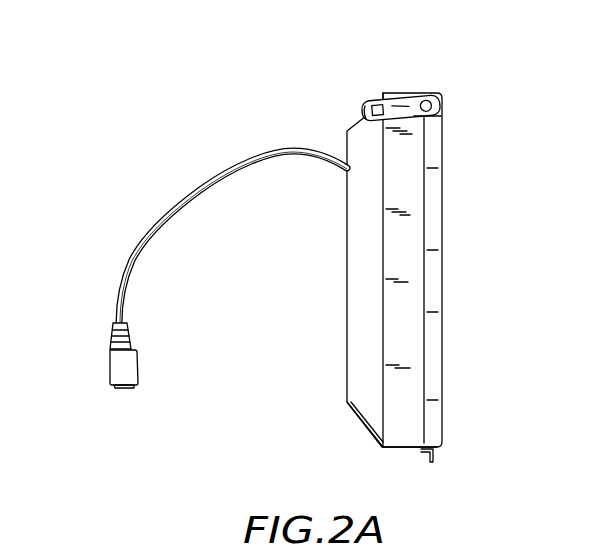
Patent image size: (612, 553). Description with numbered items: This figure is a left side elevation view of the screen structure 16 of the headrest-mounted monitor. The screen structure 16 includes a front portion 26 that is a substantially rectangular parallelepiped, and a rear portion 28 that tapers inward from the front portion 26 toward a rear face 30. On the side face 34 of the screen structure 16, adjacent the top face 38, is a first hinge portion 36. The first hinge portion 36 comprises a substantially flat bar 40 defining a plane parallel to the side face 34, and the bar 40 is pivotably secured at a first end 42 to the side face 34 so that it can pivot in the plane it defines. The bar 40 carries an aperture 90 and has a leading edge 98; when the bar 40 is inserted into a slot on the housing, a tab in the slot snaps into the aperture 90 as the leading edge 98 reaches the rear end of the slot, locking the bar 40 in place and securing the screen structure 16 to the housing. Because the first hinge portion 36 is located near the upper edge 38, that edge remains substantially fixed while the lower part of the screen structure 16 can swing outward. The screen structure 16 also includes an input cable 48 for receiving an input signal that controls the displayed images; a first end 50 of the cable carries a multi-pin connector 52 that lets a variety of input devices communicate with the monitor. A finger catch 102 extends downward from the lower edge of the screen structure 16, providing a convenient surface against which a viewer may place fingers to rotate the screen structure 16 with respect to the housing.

The screen structure 16 is at (464, 73).
The front portion 26 is at (402, 437).
The rear portion 28 is at (367, 412).
The rear face 30 is at (346, 360).
The right face 34 is at (397, 237).
The first hinge portion 36 is at (388, 97).
The top face 38 is at (405, 93).
The flat bar 40 is at (418, 115).
The first end 42 is at (437, 107).
The input cable 48 is at (216, 172).
The first end of the cable 50 is at (116, 321).
The multi-pin connector 52 is at (108, 371).
The aperture 90 is at (370, 104).
The leading edge 98 is at (366, 113).
The finger catch 102 is at (435, 456).